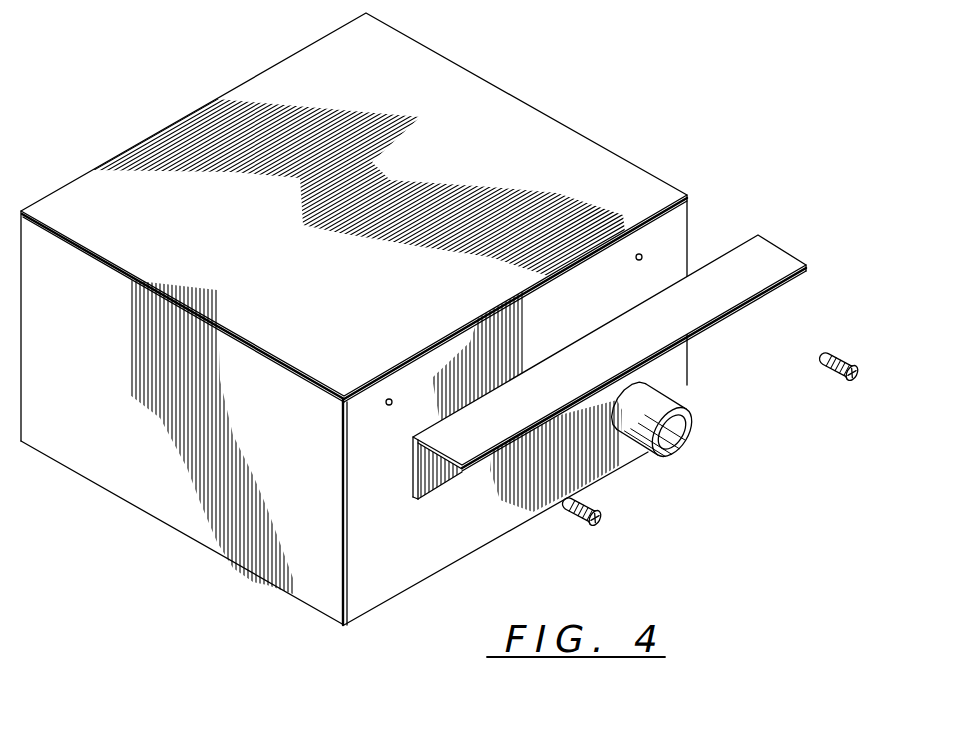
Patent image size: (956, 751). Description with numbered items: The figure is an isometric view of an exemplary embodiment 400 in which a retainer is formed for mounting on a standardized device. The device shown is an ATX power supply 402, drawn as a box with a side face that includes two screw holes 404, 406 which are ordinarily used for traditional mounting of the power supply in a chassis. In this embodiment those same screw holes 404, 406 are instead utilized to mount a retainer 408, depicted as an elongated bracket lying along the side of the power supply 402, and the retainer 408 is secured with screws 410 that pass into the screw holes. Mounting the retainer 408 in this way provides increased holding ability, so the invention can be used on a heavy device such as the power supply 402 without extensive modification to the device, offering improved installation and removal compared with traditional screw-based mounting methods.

The exemplary embodiment 400 is at (441, 312).
The ATX power supply 402 is at (492, 106).
The screw hole 404 is at (642, 254).
The screw hole 406 is at (388, 398).
The retainer 408 is at (754, 263).
The screws 410 is at (590, 512).